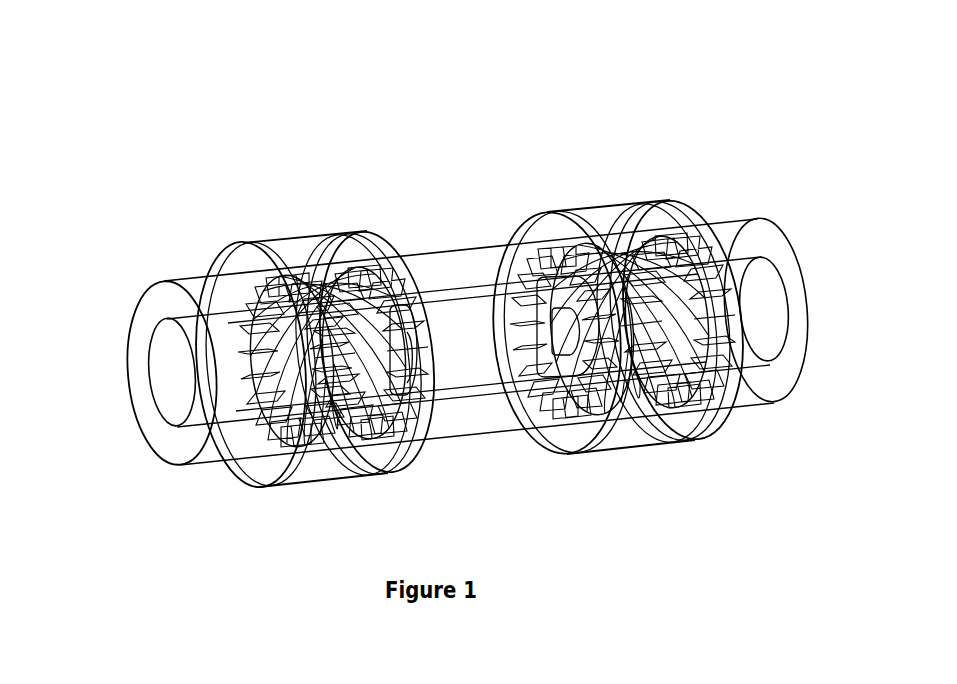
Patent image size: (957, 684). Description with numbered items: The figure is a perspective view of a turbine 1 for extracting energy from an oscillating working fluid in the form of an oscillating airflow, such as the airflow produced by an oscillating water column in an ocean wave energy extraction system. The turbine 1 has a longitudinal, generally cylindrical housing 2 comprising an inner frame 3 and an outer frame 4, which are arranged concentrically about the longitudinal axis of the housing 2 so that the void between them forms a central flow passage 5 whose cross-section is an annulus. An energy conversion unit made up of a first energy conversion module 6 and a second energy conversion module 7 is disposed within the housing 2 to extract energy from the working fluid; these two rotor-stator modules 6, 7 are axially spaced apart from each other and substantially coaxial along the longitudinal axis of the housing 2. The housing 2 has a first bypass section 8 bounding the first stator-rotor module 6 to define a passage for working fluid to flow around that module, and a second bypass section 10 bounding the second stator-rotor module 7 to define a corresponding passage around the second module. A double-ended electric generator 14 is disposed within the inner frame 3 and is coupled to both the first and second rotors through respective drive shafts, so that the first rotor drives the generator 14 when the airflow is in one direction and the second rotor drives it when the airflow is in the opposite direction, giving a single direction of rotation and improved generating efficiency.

The turbine 1 is at (722, 75).
The housing 2 is at (453, 250).
The inner frame 3 is at (148, 372).
The outer frame 4 is at (147, 432).
The central flow passage 5 is at (141, 306).
The first energy conversion module 6 is at (318, 268).
The second energy conversion module 7 is at (593, 212).
The first bypass section 8 is at (248, 247).
The second bypass section 10 is at (689, 176).
The double-ended electric generator 14 is at (482, 355).